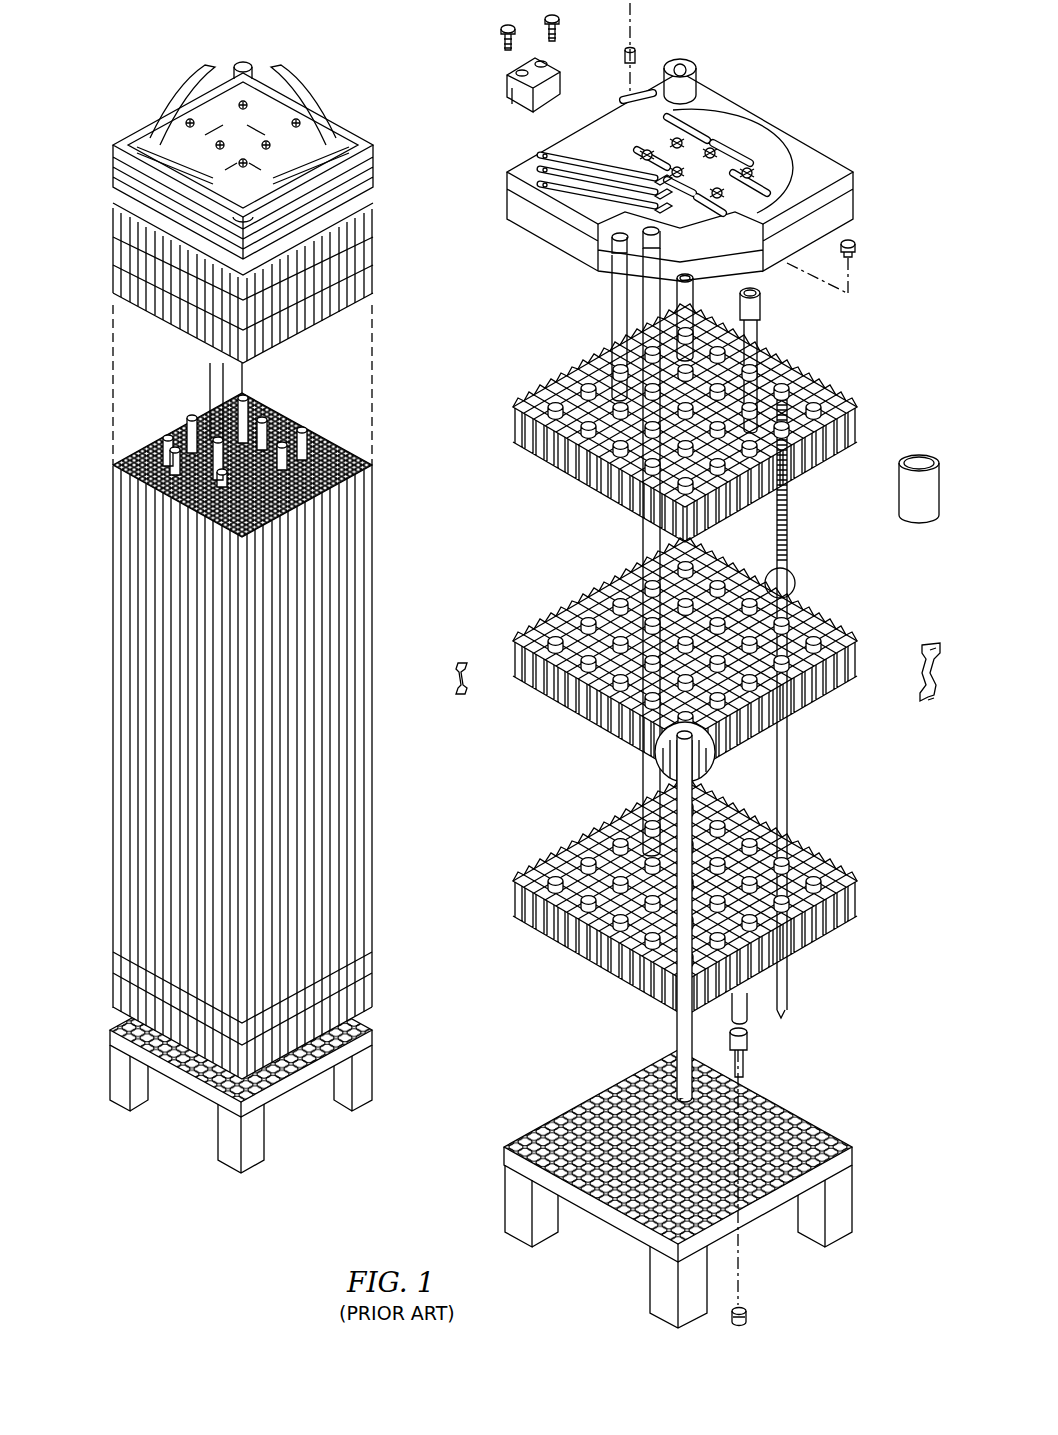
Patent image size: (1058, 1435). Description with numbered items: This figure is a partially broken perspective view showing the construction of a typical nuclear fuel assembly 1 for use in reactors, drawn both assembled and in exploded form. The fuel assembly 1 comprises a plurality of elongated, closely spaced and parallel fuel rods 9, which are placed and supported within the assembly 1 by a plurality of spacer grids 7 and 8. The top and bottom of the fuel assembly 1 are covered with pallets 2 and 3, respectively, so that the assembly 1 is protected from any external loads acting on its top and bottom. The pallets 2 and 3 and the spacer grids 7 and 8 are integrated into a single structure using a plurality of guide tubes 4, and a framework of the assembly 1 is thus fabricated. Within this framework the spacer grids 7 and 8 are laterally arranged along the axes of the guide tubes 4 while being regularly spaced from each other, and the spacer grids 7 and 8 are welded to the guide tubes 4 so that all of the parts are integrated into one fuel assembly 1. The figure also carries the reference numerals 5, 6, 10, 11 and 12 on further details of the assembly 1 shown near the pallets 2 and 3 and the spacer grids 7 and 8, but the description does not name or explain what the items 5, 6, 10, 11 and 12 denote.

The fuel assembly 1 is at (403, 1044).
The pallet 2 is at (757, 118).
The pallet 3 is at (762, 1230).
The guide tube 4 is at (747, 1015).
The instrumentation tube 5 is at (680, 1033).
The hold-down springs 6 is at (530, 157).
The spacer grid 7 is at (552, 380).
The spacer grid 8 is at (557, 620).
The fuel rod 9 is at (787, 522).
The grid spring 10 is at (600, 673).
The grid dimple 11 is at (717, 767).
The sleeve 12 is at (795, 582).